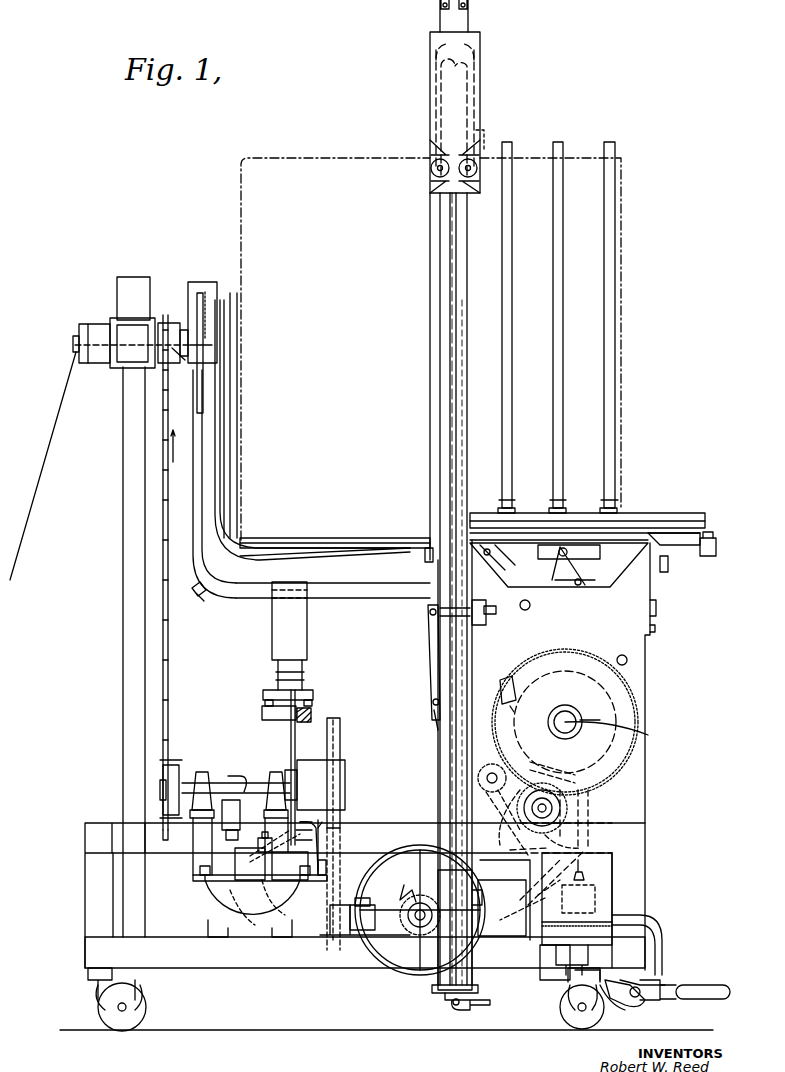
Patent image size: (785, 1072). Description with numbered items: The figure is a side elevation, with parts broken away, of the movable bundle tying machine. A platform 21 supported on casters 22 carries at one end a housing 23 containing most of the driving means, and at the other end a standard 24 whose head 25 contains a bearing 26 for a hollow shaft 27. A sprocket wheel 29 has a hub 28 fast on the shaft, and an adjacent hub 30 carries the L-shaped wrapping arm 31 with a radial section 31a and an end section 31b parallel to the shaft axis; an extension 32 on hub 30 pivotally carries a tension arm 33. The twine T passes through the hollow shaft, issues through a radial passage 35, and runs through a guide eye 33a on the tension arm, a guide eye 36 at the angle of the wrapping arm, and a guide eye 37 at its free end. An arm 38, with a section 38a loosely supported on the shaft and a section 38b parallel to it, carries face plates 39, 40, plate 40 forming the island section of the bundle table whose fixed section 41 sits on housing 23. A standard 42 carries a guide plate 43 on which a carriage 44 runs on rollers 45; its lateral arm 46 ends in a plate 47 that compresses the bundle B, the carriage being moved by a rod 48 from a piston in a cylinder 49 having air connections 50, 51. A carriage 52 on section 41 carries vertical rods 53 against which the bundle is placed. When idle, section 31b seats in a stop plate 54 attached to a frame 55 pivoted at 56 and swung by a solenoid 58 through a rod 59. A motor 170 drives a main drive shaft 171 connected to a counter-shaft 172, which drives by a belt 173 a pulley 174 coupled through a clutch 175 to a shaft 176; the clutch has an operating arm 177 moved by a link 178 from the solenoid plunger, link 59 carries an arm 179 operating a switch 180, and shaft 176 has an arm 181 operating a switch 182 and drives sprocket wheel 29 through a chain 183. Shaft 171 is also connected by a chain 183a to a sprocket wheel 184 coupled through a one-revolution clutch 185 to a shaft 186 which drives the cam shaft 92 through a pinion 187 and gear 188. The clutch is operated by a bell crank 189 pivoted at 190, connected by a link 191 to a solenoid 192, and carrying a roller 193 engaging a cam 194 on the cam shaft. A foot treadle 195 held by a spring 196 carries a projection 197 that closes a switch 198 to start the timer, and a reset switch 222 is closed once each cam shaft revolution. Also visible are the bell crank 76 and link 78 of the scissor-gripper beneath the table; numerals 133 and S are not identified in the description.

The bundle B is at (298, 168).
The standard 42 is at (470, 20).
The carriage 44 is at (476, 47).
The lateral arm 46 is at (476, 92).
The plate 47 is at (478, 142).
The rollers 45 is at (430, 165).
The guide plate 43 is at (440, 352).
The rod 48 is at (448, 312).
The cylinder 49 is at (460, 662).
The vertical rods 53 is at (606, 146).
The fixed section 41 is at (640, 512).
The carriage 52 is at (672, 520).
The knob 133 is at (668, 566).
The strapping machine frame S is at (672, 652).
The housing 23 is at (648, 695).
The platform 21 is at (238, 970).
The casters 22 is at (143, 1002).
The standard 24 is at (120, 578).
The head 25 is at (123, 277).
The bearing 26 is at (103, 322).
The hollow shaft 27 is at (75, 336).
The hub 28 is at (170, 320).
The sprocket wheel 29 is at (163, 320).
The hub 30 is at (186, 325).
The tension arm 33 is at (212, 290).
The extension 32 is at (205, 343).
The guide eye 33a is at (205, 410).
The radial passage 35 is at (182, 410).
The face plate 39 is at (240, 318).
The wrapping arm 31 is at (300, 517).
The section 31a is at (192, 505).
The end section 31b is at (262, 604).
The guide eye 36 is at (200, 602).
The arm 38 is at (312, 444).
The section 38a is at (220, 488).
The section 38b is at (305, 556).
The face plate 40 is at (352, 540).
The guide eye 37 is at (426, 554).
The stop plate 54 is at (308, 623).
The frame 55 is at (306, 675).
The pivot 56 is at (315, 700).
The rod 59 is at (292, 750).
The switch 182 is at (230, 828).
The shaft 176 is at (244, 785).
The arm 181 is at (228, 780).
The link 178 is at (245, 819).
The arm 179 is at (258, 846).
The switch 180 is at (258, 857).
The clutch 175 is at (308, 775).
The pulley 174 is at (342, 740).
The operating arm 177 is at (318, 826).
The solenoid 58 is at (286, 870).
The motor 170 is at (208, 906).
The chain 183 is at (170, 697).
The belt 173 is at (332, 875).
The main drive shaft 171 is at (415, 930).
The counter-shaft 172 is at (320, 940).
The connection 51 is at (485, 1002).
The switch 198 is at (560, 980).
The sprocket wheel 184 is at (520, 858).
The chain 183a is at (530, 900).
The solenoid 192 is at (542, 910).
The clutch 185 is at (615, 823).
The link 191 is at (615, 853).
The spring 196 is at (618, 912).
The foot treadle 195 is at (700, 985).
The projection 197 is at (615, 1005).
The gear 188 is at (542, 652).
The roller 193 is at (565, 722).
The cam shaft 92 is at (582, 735).
The cam 194 is at (628, 758).
The reset switch 222 is at (518, 694).
The bell crank 189 is at (551, 760).
The pivot 190 is at (489, 767).
The shaft 186 is at (575, 802).
The pinion 187 is at (549, 824).
The link 78 is at (428, 655).
The bell crank 76 is at (430, 697).
The connection 50 is at (486, 614).
The twine T is at (46, 470).